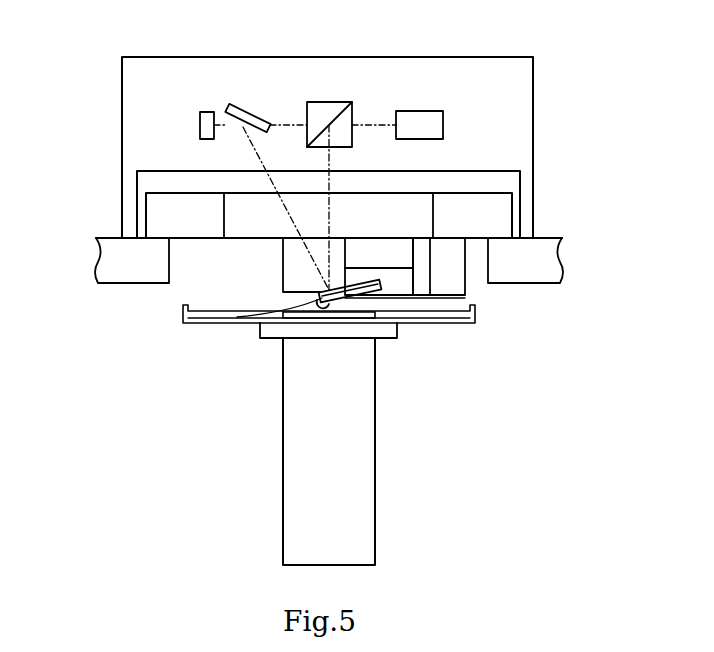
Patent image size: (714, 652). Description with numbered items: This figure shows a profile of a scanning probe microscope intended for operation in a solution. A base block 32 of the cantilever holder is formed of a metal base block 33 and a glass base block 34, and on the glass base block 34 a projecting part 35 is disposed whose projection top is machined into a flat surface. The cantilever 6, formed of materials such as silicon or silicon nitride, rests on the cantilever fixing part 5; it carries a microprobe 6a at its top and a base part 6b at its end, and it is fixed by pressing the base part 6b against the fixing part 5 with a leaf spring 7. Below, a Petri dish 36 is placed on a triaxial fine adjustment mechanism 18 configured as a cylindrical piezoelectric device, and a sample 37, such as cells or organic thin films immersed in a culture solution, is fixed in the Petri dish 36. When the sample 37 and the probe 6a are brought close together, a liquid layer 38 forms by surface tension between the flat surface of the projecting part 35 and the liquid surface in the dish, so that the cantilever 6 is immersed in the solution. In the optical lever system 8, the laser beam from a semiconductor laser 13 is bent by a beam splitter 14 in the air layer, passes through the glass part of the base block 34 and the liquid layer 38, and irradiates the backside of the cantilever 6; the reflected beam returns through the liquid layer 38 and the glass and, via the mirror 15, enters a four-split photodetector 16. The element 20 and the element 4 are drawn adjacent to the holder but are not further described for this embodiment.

The optical lever system 8 is at (458, 66).
The semiconductor laser 13 is at (436, 122).
The beam splitter 14 is at (332, 101).
The mirror 15 is at (233, 110).
The four-split photodetector 16 is at (200, 125).
The base block 32 is at (490, 190).
The metal base block 33 is at (160, 222).
The glass base block 34 is at (242, 207).
The carrier 20 is at (106, 276).
The objective housing 4 is at (395, 257).
The cantilever fixing part 5 is at (400, 282).
The projecting part 35 is at (290, 297).
The liquid layer 38 is at (237, 317).
The Petri dish 36 is at (192, 327).
The cantilever 6 is at (318, 302).
The microprobe 6a is at (323, 304).
The base part 6b is at (372, 298).
The leaf spring 7 is at (386, 300).
The sample 37 is at (372, 325).
The triaxial fine adjustment mechanism 18 is at (357, 505).